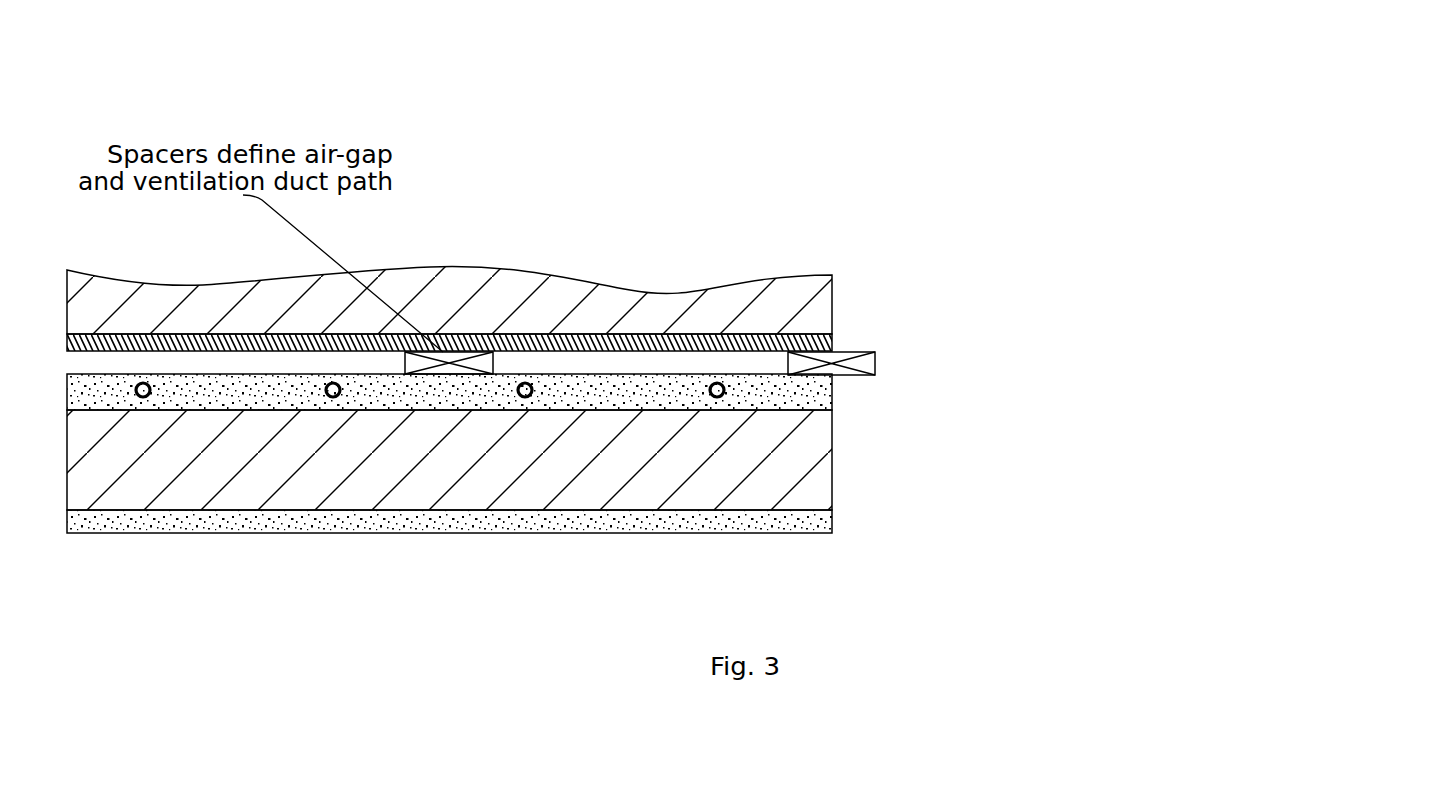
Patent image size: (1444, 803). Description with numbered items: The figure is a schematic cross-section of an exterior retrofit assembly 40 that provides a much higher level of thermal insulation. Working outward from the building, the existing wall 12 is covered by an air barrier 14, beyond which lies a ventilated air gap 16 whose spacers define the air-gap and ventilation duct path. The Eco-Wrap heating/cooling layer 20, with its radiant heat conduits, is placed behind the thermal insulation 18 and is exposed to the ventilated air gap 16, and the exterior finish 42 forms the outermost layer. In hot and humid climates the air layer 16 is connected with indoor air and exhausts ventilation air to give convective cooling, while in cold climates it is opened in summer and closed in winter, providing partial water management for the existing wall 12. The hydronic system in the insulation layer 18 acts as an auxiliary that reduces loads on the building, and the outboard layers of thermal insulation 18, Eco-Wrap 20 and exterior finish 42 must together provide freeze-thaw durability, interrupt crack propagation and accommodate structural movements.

The existing wall 12 is at (543, 305).
The air barrier 14 is at (737, 343).
The ventilated air gap 16 is at (703, 364).
The thermal insulation 18 is at (783, 447).
The Eco-Wrap heating/cooling layer 20 is at (780, 393).
The exterior retrofit assembly 40 is at (977, 145).
The exterior finish 42 is at (797, 532).